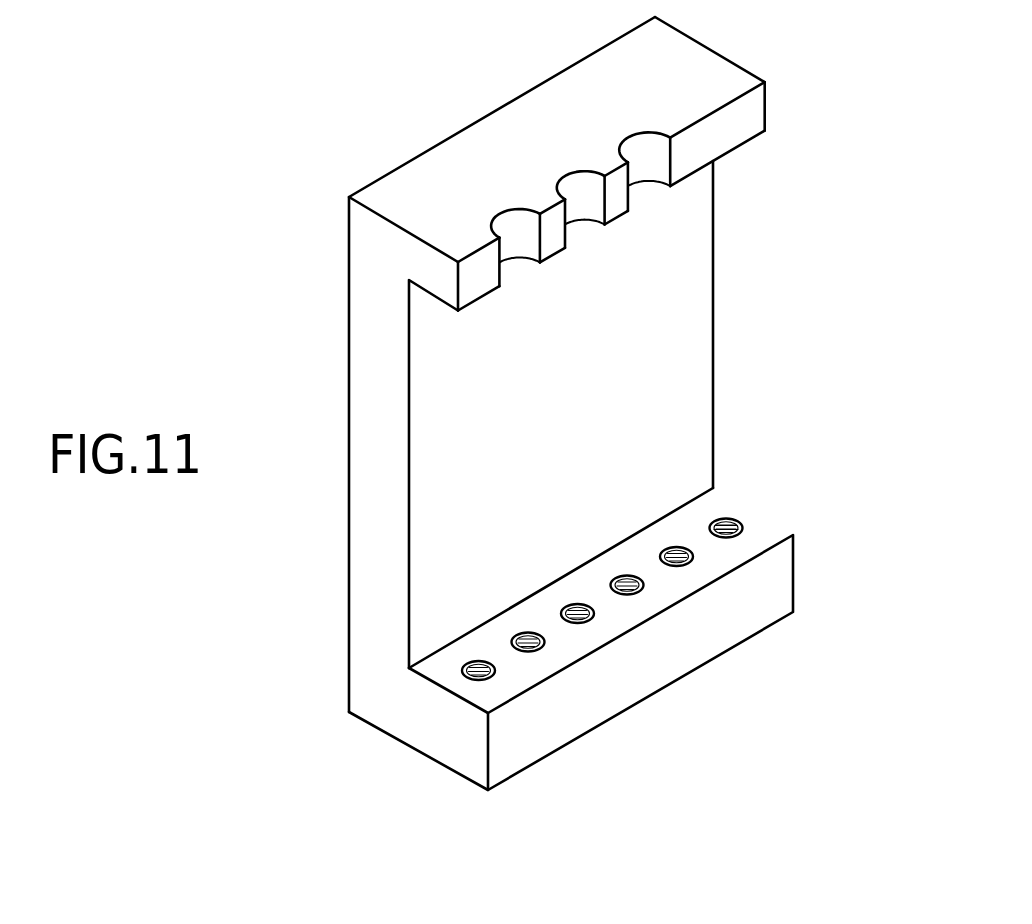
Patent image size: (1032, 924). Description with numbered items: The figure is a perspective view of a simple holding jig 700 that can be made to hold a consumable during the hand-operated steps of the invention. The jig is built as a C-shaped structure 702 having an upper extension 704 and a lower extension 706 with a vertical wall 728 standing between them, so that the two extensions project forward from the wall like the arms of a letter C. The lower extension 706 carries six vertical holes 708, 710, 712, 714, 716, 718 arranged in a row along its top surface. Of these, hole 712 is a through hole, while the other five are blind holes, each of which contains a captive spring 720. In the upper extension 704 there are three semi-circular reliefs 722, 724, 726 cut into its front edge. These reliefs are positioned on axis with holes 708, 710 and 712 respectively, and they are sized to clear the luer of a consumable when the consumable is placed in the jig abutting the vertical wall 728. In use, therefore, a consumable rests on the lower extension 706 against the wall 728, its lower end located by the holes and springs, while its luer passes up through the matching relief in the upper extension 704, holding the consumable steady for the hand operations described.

The jig 700 is at (347, 70).
The C-shaped structure 702 is at (370, 387).
The upper extension 704 is at (753, 108).
The lower extension 706 is at (785, 556).
The vertical hole 708 is at (493, 678).
The vertical hole 710 is at (543, 650).
The vertical hole 712 is at (593, 620).
The vertical hole 714 is at (642, 588).
The vertical hole 716 is at (692, 560).
The vertical hole 718 is at (740, 535).
The captive spring 720 is at (730, 518).
The semi-circular relief 722 is at (508, 228).
The semi-circular relief 724 is at (572, 192).
The semi-circular relief 726 is at (638, 155).
The vertical wall 728 is at (668, 305).